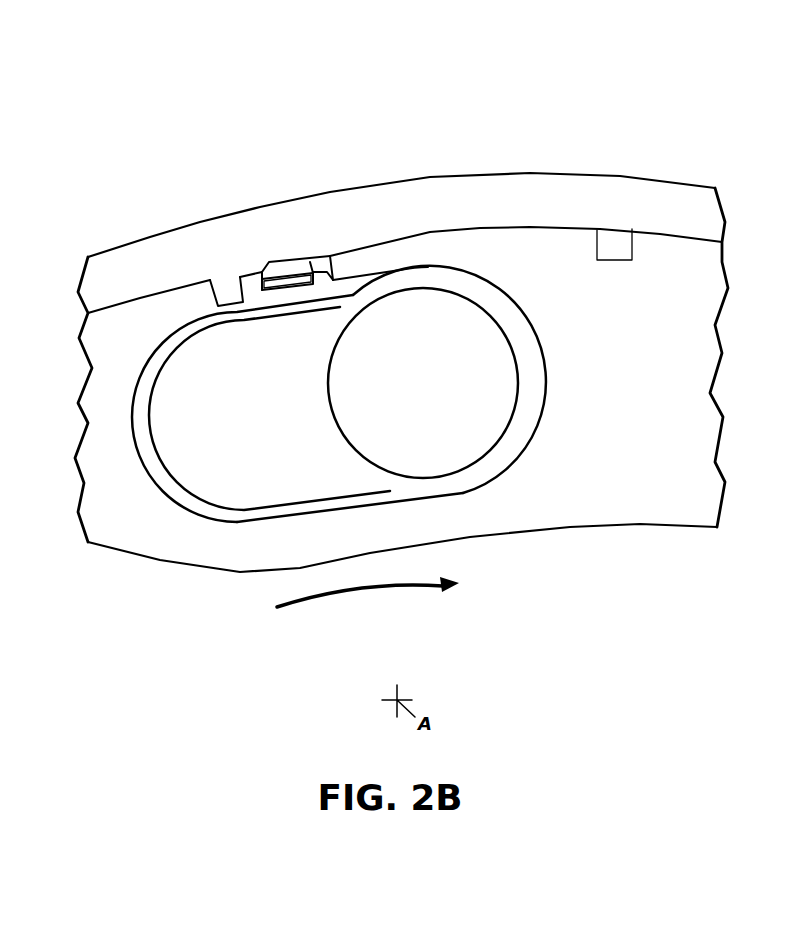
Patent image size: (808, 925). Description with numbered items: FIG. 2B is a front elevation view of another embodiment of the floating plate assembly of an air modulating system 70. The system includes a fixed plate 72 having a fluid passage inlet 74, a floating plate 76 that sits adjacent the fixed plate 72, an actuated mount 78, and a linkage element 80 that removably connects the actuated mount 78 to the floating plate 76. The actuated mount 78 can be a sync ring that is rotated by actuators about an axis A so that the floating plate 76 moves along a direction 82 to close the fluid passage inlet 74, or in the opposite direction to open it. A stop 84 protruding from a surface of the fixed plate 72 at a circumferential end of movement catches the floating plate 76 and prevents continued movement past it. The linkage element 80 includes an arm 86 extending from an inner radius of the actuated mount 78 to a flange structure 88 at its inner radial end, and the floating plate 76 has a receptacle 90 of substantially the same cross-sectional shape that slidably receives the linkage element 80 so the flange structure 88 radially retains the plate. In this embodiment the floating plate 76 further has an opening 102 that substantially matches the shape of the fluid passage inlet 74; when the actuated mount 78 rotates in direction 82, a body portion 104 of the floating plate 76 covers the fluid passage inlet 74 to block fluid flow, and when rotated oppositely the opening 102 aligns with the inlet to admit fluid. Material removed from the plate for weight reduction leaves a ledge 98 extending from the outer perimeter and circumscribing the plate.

The air modulating system 70 is at (700, 122).
The fixed plate 72 is at (475, 262).
The fluid passage inlet 74 is at (406, 392).
The floating plate 76 is at (132, 316).
The actuated mount 78 is at (401, 215).
The linkage element 80 is at (264, 272).
The direction 82 is at (368, 590).
The stop 84 is at (162, 323).
The arm 86 is at (283, 274).
The flange structure 88 is at (304, 291).
The receptacle 90 is at (258, 293).
The ledge 98 is at (232, 520).
The opening 102 is at (350, 327).
The body portion 104 is at (202, 424).